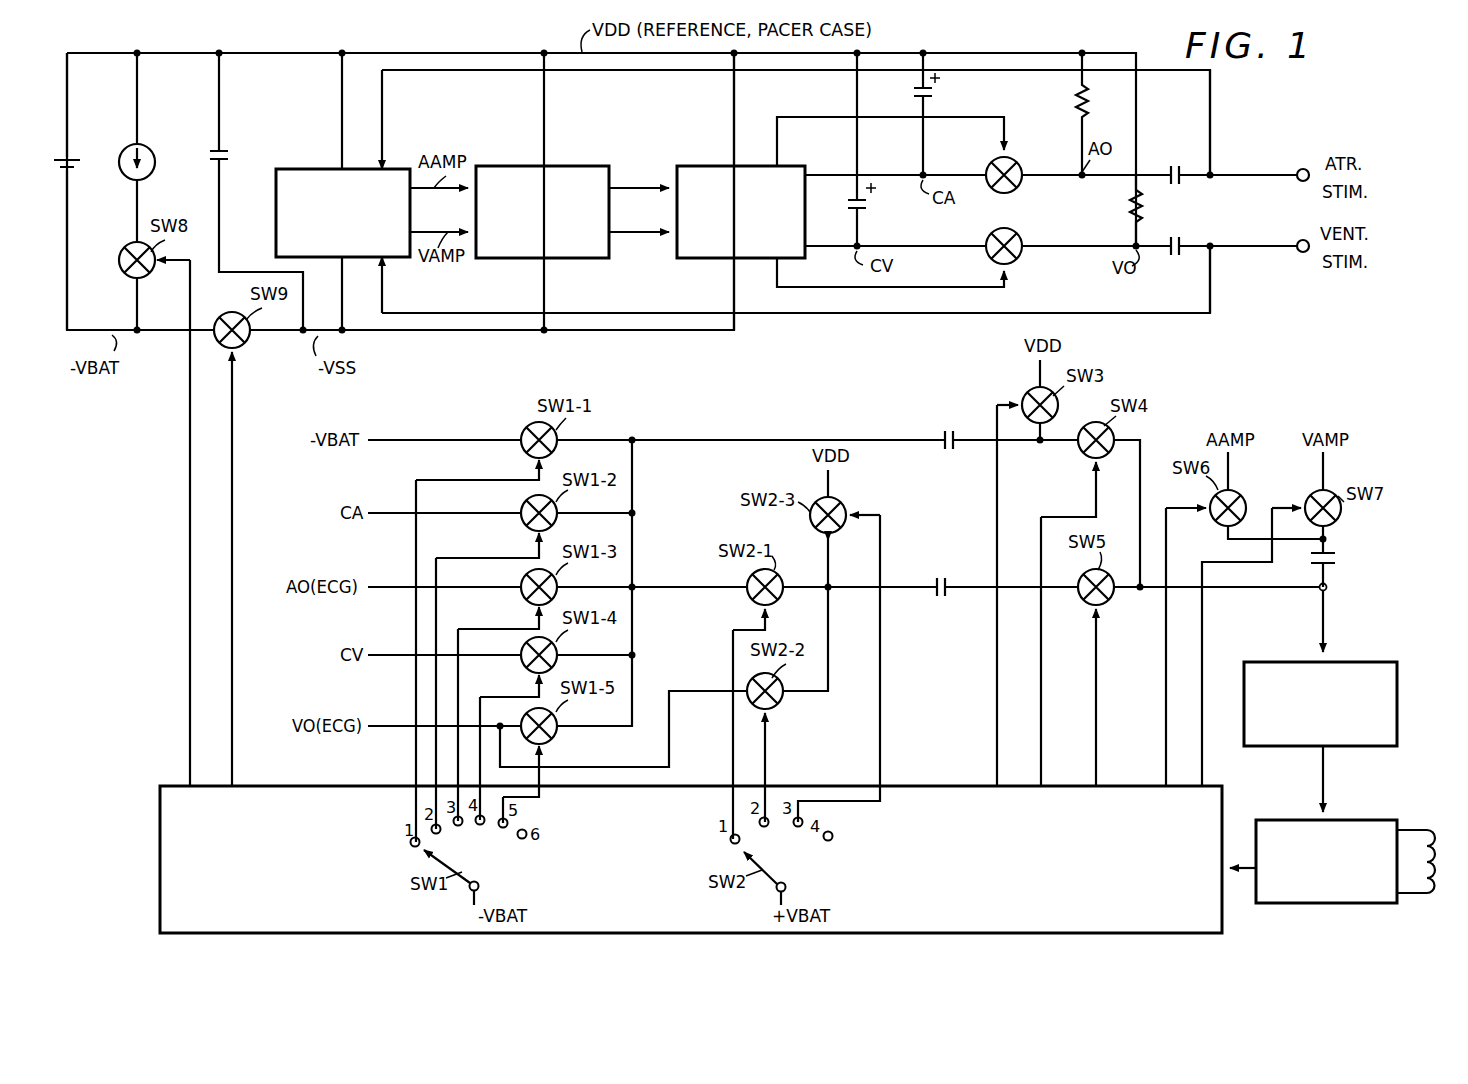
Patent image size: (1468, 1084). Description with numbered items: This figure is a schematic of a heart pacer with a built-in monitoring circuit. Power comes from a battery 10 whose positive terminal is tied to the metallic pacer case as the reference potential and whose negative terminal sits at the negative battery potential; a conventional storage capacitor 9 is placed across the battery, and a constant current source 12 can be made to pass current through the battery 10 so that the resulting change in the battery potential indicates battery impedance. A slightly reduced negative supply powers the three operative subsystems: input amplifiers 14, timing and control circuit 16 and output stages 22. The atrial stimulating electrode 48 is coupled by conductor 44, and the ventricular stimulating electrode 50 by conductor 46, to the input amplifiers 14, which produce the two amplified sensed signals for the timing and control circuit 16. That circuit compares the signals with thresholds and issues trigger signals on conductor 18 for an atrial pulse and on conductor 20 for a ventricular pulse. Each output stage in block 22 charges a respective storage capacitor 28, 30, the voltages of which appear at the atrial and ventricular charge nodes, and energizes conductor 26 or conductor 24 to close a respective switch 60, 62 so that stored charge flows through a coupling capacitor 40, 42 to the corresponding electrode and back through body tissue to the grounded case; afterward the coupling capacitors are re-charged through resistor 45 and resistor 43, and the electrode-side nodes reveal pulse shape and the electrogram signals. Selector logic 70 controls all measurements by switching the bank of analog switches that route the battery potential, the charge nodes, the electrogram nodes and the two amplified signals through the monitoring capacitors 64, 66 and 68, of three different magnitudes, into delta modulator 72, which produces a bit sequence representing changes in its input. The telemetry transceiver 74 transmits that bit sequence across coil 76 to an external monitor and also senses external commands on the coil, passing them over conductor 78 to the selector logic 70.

The storage capacitor 9 is at (228, 160).
The battery 10 is at (64, 160).
The constant current source 12 is at (151, 153).
The input amplifiers 14 is at (276, 190).
The timing and control circuit 16 is at (476, 213).
The conductor 18 is at (646, 184).
The conductor 20 is at (648, 236).
The output stages 22 is at (708, 166).
The conductor 24 is at (810, 118).
The conductor 26 is at (844, 289).
The capacitor 28 is at (870, 206).
The capacitor 30 is at (935, 94).
The coupling capacitor 40 is at (1176, 232).
The coupling capacitor 42 is at (1174, 160).
The resistor 43 is at (1074, 101).
The conductor 44 is at (1210, 108).
The resistor 45 is at (1128, 208).
The conductor 46 is at (1210, 286).
The atrial stimulating electrode 48 is at (1296, 170).
The ventricular stimulating electrode 50 is at (1296, 238).
The switch 60 is at (1017, 236).
The switch 62 is at (1017, 164).
The capacitor 64 is at (946, 424).
The capacitor 66 is at (936, 600).
The capacitor 68 is at (1338, 560).
The selector logic 70 is at (940, 784).
The delta modulator 72 is at (1370, 664).
The telemetry transceiver 74 is at (1286, 820).
The coil 76 is at (1428, 826).
The conductor 78 is at (1246, 864).